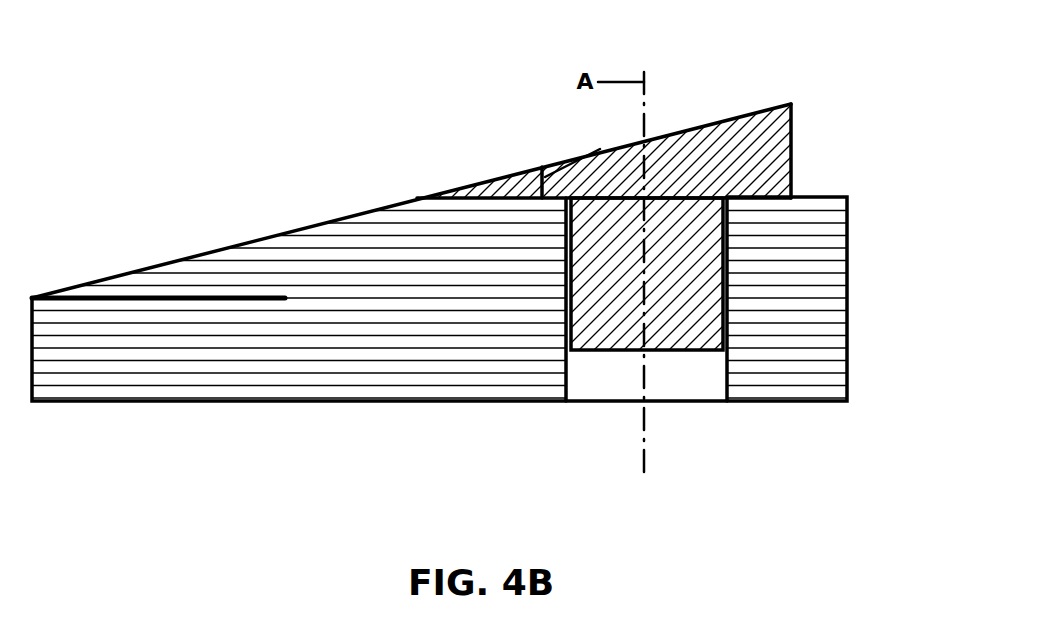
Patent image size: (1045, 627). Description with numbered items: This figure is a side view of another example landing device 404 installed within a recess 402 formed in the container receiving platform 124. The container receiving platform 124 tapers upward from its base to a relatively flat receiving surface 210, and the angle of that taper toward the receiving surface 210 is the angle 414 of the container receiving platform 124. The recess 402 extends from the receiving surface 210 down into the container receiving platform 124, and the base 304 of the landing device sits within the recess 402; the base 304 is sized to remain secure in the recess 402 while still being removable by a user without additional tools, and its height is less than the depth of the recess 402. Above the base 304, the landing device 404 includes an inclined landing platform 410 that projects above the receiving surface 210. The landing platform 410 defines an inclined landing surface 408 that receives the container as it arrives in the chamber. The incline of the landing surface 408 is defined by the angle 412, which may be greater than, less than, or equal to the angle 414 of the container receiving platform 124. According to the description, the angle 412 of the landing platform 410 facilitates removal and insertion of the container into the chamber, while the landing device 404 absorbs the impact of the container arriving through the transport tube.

The container receiving platform 124 is at (345, 218).
The angle of container receiving platform 414 is at (205, 259).
The inclined landing surface 408 is at (541, 167).
The angle of landing platform 412 is at (600, 149).
The landing device 404 is at (808, 118).
The inclined landing platform 410 is at (792, 165).
The receiving surface 210 is at (818, 197).
The base 304 is at (727, 289).
The recess 402 is at (727, 363).